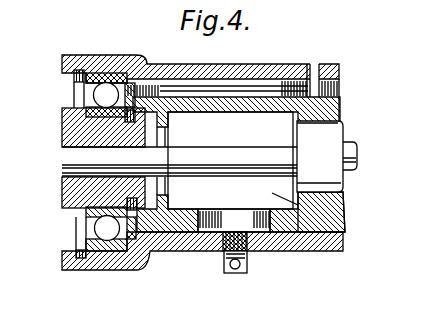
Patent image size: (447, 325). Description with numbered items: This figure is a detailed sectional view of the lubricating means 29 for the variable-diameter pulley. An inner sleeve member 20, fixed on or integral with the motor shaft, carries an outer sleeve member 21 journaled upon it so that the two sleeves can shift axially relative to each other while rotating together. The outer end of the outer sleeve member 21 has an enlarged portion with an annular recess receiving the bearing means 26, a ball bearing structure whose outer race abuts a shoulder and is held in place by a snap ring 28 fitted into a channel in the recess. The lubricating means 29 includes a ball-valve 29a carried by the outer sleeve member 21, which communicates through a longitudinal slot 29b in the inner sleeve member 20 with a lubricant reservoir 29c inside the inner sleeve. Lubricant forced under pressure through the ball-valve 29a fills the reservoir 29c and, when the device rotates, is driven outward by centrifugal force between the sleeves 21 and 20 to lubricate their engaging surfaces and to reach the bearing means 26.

The inner sleeve member 20 is at (343, 206).
The outer sleeve member 21 is at (163, 253).
The bearing means 26 is at (87, 268).
The snap ring 28 is at (74, 257).
The lubricating means 29 is at (224, 268).
The ball-valve 29a is at (249, 270).
The longitudinal slot 29b is at (270, 208).
The lubricant reservoir 29c is at (312, 208).